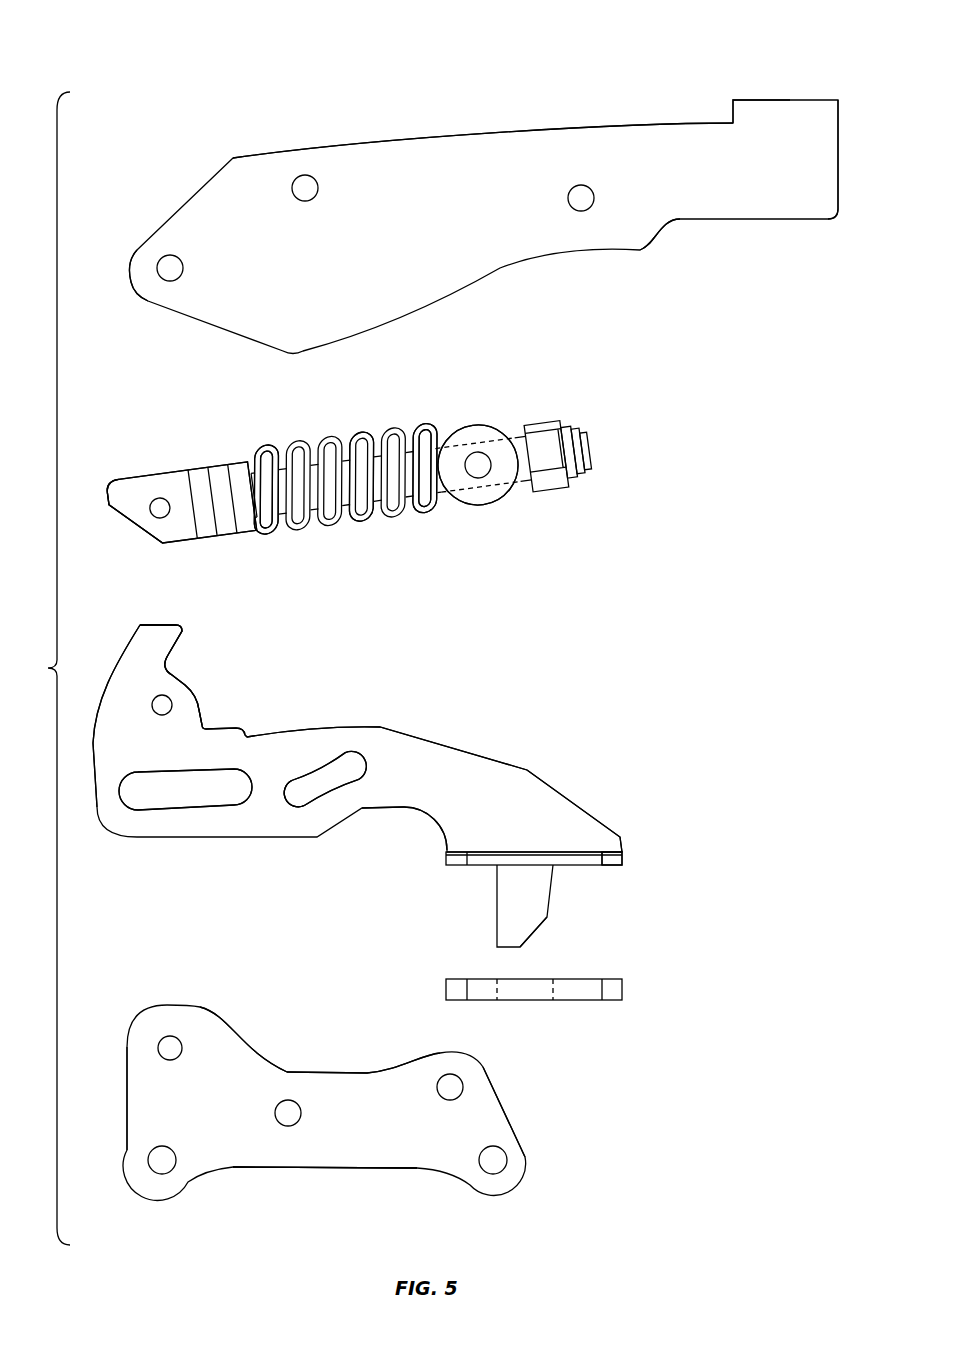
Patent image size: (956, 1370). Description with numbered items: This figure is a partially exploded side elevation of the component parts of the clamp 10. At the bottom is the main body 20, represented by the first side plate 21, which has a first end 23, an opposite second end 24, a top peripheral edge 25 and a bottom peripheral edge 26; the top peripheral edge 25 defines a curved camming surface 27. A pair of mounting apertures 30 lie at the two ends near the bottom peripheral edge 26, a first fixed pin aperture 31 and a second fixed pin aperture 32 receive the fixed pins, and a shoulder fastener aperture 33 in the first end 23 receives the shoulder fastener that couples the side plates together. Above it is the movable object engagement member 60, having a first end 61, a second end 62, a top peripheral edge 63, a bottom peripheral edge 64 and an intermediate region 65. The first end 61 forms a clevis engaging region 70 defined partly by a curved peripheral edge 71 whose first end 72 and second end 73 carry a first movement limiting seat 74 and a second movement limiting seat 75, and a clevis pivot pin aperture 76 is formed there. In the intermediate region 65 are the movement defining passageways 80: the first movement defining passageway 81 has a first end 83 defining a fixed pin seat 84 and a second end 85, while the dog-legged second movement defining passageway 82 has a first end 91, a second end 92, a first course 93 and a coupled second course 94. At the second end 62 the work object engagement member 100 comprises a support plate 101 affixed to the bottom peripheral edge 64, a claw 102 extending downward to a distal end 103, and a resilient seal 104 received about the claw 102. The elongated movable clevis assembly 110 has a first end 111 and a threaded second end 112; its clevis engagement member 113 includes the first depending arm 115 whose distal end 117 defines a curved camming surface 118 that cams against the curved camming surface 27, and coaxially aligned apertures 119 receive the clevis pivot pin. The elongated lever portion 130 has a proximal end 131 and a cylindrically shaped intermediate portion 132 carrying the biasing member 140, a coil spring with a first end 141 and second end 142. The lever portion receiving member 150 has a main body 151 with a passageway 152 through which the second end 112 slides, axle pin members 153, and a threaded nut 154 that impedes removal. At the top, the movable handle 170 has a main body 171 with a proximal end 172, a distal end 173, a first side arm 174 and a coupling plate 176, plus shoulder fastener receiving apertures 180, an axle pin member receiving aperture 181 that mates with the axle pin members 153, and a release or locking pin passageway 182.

The clamp 10 is at (39, 668).
The main body 20 is at (268, 1197).
The first side plate 21 is at (402, 1145).
The first end 23 is at (127, 1103).
The second end 24 is at (512, 1117).
The top peripheral edge 25 is at (373, 1073).
The bottom peripheral edge 26 is at (360, 1170).
The curved camming surface 27 is at (240, 1043).
The mounting apertures 30 is at (510, 1163).
The first fixed pin aperture 31 is at (295, 1107).
The second fixed pin aperture 32 is at (448, 1080).
The shoulder fastener aperture 33 is at (170, 1040).
The movable object engagement member 60 is at (490, 742).
The first end 61 is at (92, 745).
The second end 62 is at (577, 823).
The top peripheral edge 63 is at (427, 743).
The bottom peripheral edge 64 is at (398, 810).
The intermediate region 65 is at (290, 743).
The clevis engaging region 70 is at (220, 660).
The curved peripheral edge 71 is at (197, 690).
The first end 72 is at (167, 660).
The second end 73 is at (204, 720).
The first movement limiting seat 74 is at (168, 648).
The second movement limiting seat 75 is at (248, 728).
The clevis pivot pin aperture 76 is at (160, 700).
The movement defining passageways 80 is at (160, 770).
The first movement defining passageway 81 is at (188, 805).
The second movement defining passageway 82 is at (330, 757).
The first end 83 is at (118, 797).
The fixed pin seat 84 is at (127, 777).
The second end 85 is at (257, 795).
The first end 91 is at (292, 807).
The second end 92 is at (368, 767).
The first course 93 is at (290, 780).
The second course 94 is at (342, 750).
The work object engagement member 100 is at (633, 825).
The support plate 101 is at (622, 859).
The claw 102 is at (533, 882).
The distal end 103 is at (520, 920).
The resilient seal 104 is at (623, 990).
The elongated movable clevis assembly 110 is at (368, 455).
The first end 111 is at (112, 492).
The second end 112 is at (583, 440).
The clevis engagement member 113 is at (237, 458).
The first depending arm 115 is at (179, 480).
The distal end 117 is at (128, 514).
The curved camming surface 118 is at (135, 537).
The coaxially aligned apertures 119 is at (162, 498).
The elongated lever portion 130 is at (320, 462).
The proximal end 131 is at (257, 468).
The cylindrically shaped intermediate portion 132 is at (374, 508).
The biasing member 140 is at (335, 535).
The first end 141 is at (267, 535).
The second end 142 is at (420, 440).
The lever portion receiving member 150 is at (483, 418).
The main body 151 is at (463, 427).
The passageway 152 is at (503, 485).
The axle pin members 153 is at (477, 470).
The threaded nut 154 is at (540, 423).
The movable handle 170 is at (548, 92).
The main body 171 is at (460, 213).
The proximal end 172 is at (137, 275).
The distal end 173 is at (830, 126).
The first side arm 174 is at (645, 222).
The coupling plate 176 is at (790, 98).
The shoulder fastener receiving apertures 180 is at (168, 258).
The axle pin member receiving aperture 181 is at (581, 205).
The release or locking pin passageway 182 is at (307, 178).